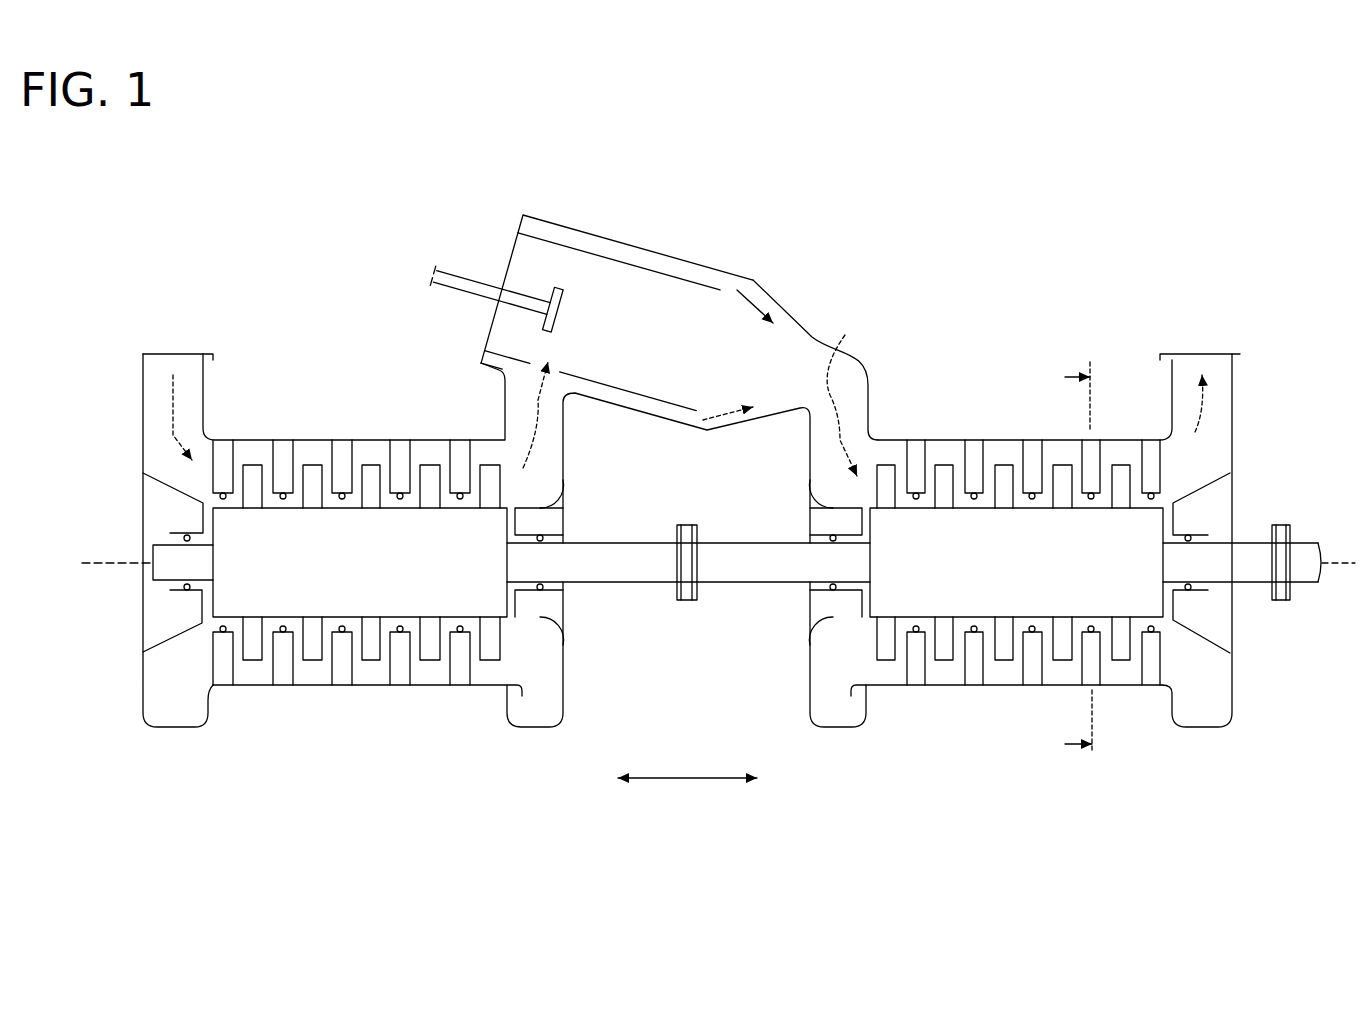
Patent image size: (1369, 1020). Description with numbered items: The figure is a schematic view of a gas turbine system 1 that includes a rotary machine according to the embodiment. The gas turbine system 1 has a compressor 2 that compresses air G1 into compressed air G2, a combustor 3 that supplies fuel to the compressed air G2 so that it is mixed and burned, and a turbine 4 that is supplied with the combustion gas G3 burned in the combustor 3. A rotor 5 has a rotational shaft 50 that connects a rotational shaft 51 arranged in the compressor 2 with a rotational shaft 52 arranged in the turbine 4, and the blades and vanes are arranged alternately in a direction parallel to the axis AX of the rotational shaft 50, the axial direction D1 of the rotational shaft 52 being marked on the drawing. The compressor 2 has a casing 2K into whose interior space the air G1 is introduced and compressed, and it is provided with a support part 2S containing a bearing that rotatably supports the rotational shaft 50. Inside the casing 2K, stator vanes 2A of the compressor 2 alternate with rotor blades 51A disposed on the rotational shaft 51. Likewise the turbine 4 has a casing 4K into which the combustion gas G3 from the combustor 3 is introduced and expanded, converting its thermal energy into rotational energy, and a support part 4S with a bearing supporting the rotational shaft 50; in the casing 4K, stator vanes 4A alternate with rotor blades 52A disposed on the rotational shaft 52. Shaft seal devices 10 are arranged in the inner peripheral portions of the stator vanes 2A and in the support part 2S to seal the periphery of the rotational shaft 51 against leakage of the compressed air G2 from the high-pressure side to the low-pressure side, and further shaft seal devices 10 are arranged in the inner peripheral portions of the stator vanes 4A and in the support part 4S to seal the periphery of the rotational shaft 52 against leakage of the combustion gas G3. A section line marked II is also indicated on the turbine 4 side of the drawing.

The gas turbine system 1 is at (252, 190).
The compressor 2 is at (143, 755).
The stator vanes 2A is at (341, 448).
The casing 2K is at (370, 690).
The support part 2S is at (190, 514).
The combustor 3 is at (877, 168).
The turbine 4 is at (1233, 755).
The stator vanes 4A is at (915, 448).
The casing 4K is at (1002, 688).
The support part 4S is at (855, 520).
The rotor 5 is at (772, 588).
The shaft seal devices 10 is at (270, 492).
The rotational shaft 50 is at (648, 585).
The rotational shaft 51 is at (346, 578).
The rotor blades 51A is at (316, 468).
The rotational shaft 52 is at (1003, 578).
The rotor blades 52A is at (1003, 468).
The air G1 is at (170, 388).
The compressed air G2 is at (540, 425).
The combustion gas G3 is at (762, 298).
The axis AX is at (103, 568).
The axial direction D1 is at (687, 794).
The section line II- II is at (1078, 557).